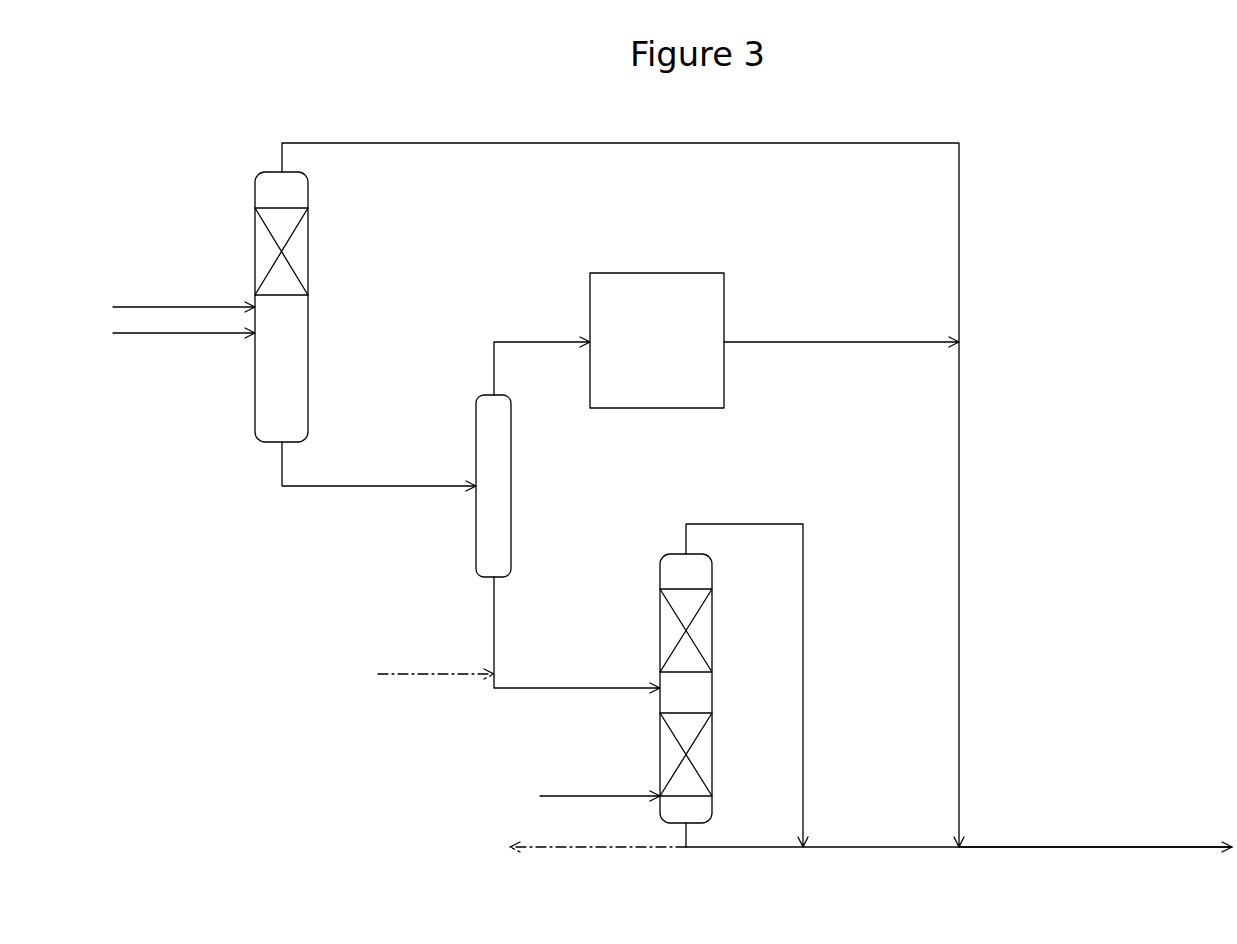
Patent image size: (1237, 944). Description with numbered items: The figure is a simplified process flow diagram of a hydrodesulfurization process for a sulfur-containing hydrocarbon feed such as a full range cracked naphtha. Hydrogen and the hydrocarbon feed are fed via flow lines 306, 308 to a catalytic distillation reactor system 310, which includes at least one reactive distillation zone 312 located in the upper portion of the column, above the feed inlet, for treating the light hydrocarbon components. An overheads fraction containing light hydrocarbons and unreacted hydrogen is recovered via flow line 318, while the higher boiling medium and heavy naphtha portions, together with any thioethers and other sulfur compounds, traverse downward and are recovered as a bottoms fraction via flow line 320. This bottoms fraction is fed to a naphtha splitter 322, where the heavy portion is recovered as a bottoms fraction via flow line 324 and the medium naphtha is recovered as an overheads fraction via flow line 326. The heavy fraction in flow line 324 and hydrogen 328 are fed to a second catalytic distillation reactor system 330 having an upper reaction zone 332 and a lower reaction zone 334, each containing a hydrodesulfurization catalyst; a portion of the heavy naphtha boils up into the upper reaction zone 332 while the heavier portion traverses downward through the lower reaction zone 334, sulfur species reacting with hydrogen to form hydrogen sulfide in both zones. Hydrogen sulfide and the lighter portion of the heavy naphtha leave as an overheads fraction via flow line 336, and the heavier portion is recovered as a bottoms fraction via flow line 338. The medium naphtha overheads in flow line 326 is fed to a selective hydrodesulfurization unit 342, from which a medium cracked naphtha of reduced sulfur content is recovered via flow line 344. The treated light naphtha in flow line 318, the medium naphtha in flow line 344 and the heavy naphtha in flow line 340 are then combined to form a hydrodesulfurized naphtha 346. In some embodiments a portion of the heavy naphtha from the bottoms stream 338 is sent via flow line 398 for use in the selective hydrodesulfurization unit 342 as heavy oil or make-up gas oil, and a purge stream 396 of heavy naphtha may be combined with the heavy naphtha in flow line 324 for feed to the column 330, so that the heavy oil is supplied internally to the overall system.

The flow line 306 is at (211, 339).
The flow line 308 is at (183, 306).
The catalytic distillation reactor system 310 is at (258, 172).
The reactive distillation zone 312 is at (293, 253).
The flow line 318 is at (478, 136).
The flow line 320 is at (376, 483).
The naphtha splitter 322 is at (476, 396).
The flow line 324 is at (486, 616).
The flow line 326 is at (513, 336).
The hydrogen 328 is at (585, 794).
The catalytic distillation reactor system 330 is at (662, 558).
The upper reaction zone 332 is at (698, 633).
The lower reaction zone 334 is at (703, 752).
The flow line 336 is at (765, 515).
The flow line 338 is at (686, 838).
The flow line 340 is at (863, 844).
The selective hydrodesulfurization unit 342 is at (670, 273).
The flow line 344 is at (812, 339).
The hydrodesulfurized naphtha 346 is at (1128, 844).
The purge stream 396 is at (416, 669).
The flow line 398 is at (560, 844).